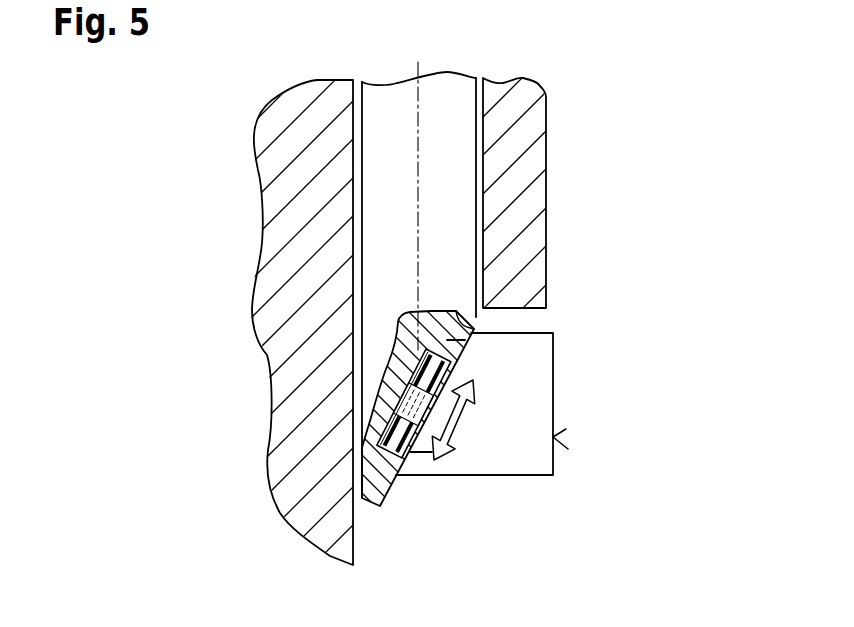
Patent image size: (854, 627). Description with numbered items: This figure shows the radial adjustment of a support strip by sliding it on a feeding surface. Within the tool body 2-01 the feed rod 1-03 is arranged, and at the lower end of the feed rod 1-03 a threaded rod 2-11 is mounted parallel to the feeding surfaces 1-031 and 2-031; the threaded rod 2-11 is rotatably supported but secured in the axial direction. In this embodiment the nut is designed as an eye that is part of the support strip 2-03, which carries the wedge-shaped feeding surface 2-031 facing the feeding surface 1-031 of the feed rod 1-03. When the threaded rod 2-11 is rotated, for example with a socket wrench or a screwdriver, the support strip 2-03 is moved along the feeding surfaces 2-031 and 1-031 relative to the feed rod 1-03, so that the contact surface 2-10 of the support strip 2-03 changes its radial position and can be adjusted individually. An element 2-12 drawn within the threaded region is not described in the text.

The feed rod 1-03 is at (453, 231).
The tool body 2-01 is at (533, 158).
The feeding surface 1-031 is at (408, 458).
The threaded rod 2-11 is at (400, 356).
The sealing element 2-12 is at (400, 400).
The feeding surface 2-031 is at (460, 322).
The support strip 2-03 is at (533, 389).
The contact surface 2-10 is at (553, 437).